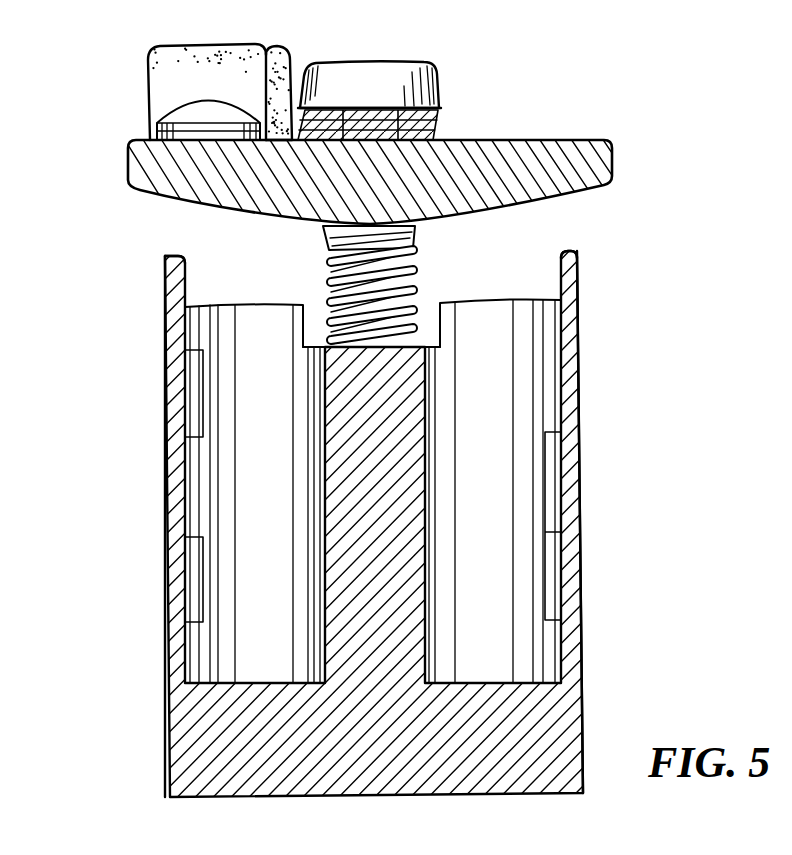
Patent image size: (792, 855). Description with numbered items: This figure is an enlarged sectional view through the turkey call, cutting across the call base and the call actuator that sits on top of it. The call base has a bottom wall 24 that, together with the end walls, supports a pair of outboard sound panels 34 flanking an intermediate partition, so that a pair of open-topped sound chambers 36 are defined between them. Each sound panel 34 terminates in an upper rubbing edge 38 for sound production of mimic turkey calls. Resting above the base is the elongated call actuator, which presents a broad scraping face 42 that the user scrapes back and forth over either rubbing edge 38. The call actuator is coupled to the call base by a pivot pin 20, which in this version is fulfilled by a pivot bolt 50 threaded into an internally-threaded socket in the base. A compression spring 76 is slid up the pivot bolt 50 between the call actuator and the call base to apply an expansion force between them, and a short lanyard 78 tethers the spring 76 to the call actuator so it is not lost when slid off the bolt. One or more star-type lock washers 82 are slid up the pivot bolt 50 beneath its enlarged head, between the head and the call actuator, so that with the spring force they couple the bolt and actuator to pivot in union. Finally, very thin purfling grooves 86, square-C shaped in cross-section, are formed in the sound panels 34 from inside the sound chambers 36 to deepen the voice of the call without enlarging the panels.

The pivot pin 20 is at (413, 65).
The pivot bolt 50 is at (402, 62).
The bottom wall 24 is at (357, 799).
The sound panel 34 is at (160, 340).
The sound chamber 36 is at (260, 344).
The upper rubbing edge 38 is at (167, 257).
The scraping face 42 is at (289, 229).
The compression spring 76 is at (407, 281).
The lanyard 78 is at (150, 83).
The star-type lock washer 82 is at (437, 127).
The purfling groove 86 is at (194, 537).